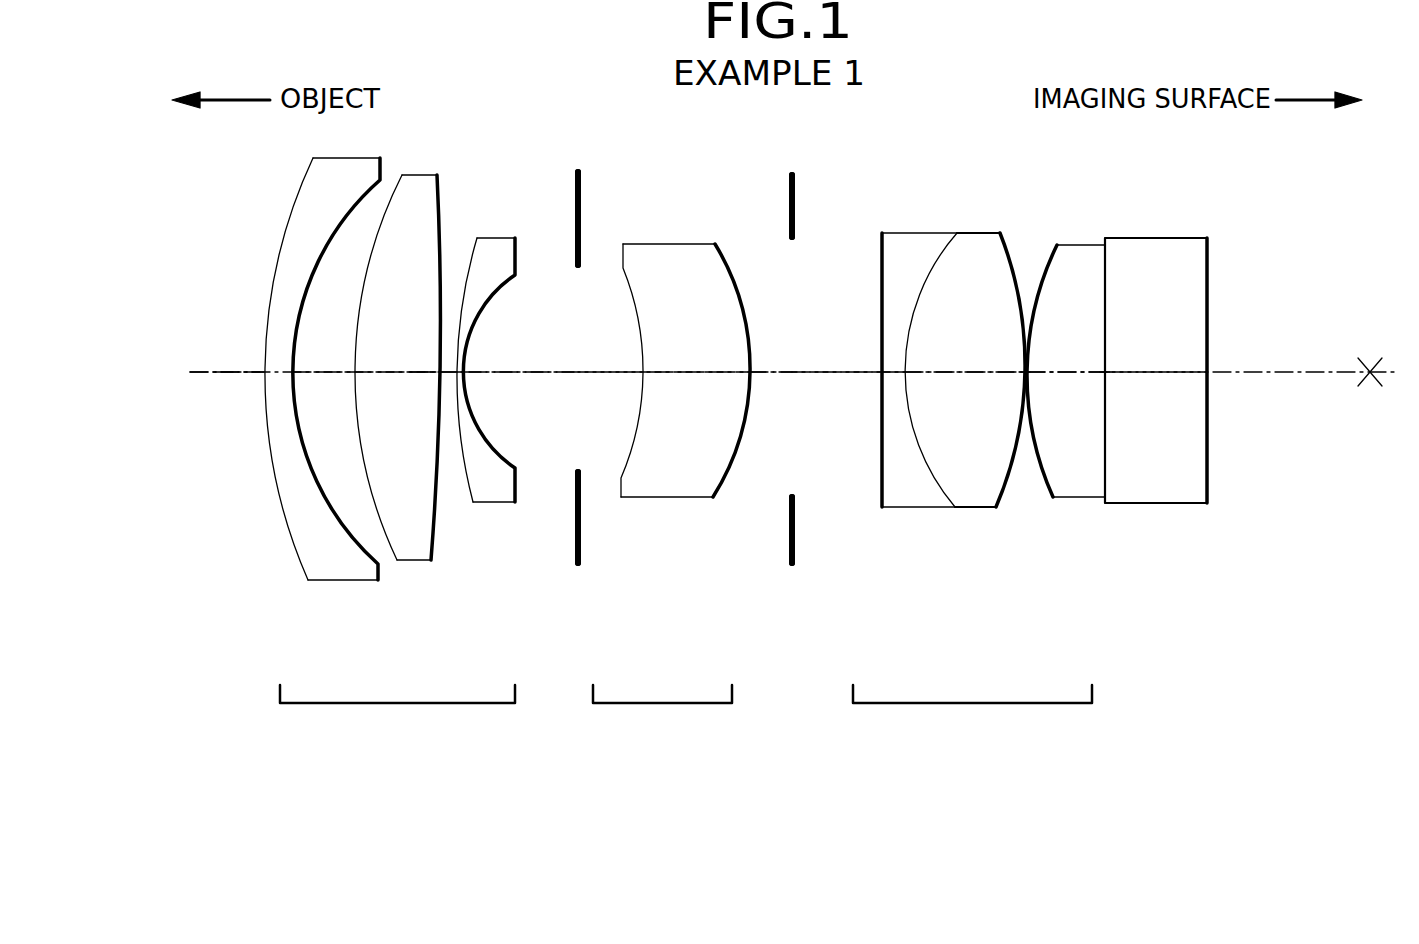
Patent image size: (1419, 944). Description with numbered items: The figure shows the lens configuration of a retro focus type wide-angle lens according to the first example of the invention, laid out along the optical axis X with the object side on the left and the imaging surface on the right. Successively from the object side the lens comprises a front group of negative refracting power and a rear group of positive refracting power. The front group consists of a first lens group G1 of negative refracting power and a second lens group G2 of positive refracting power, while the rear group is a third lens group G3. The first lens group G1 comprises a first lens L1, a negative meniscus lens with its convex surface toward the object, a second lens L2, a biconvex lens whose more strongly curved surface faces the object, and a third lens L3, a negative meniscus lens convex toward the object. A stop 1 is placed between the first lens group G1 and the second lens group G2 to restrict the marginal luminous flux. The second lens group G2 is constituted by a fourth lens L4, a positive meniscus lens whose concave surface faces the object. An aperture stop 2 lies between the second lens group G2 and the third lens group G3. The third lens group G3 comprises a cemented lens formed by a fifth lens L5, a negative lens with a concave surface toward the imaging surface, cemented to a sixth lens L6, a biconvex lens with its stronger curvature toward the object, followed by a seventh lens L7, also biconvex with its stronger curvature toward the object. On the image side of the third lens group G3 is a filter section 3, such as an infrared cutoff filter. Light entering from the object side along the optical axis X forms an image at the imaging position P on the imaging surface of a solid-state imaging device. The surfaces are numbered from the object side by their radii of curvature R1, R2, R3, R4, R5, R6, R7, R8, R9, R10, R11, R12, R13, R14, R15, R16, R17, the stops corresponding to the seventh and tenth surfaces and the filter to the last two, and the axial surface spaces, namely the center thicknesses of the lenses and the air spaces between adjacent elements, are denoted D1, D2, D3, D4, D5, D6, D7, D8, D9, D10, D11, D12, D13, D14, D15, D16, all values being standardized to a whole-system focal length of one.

The stop 1 is at (575, 540).
The aperture stop 2 is at (789, 540).
The filter section 3 is at (1160, 503).
The optical axis X is at (212, 374).
The imaging position P is at (1370, 388).
The first lens group G1 is at (397, 711).
The second lens group G2 is at (662, 711).
The third lens group G3 is at (972, 711).
The first lens L1 is at (345, 580).
The second lens L2 is at (422, 560).
The third lens L3 is at (495, 502).
The fourth lens L4 is at (676, 497).
The fifth lens L5 is at (915, 507).
The sixth lens L6 is at (985, 507).
The seventh lens L7 is at (1070, 497).
The radius of curvature of first lens surface R1 is at (296, 235).
The radius of curvature of second lens surface R2 is at (372, 196).
The radius of curvature of third lens surface R3 is at (362, 290).
The radius of curvature of fourth lens surface R4 is at (442, 205).
The radius of curvature of fifth lens surface R5 is at (466, 258).
The radius of curvature of sixth lens surface R6 is at (506, 292).
The radius of curvature of seventh surface R7 is at (574, 206).
The radius of curvature of eighth lens surface R8 is at (626, 266).
The radius of curvature of ninth lens surface R9 is at (736, 296).
The radius of curvature of tenth surface R10 is at (789, 207).
The radius of curvature of eleventh lens surface R11 is at (880, 268).
The radius of curvature of twelfth lens surface R12 is at (934, 262).
The radius of curvature of thirteenth lens surface R13 is at (1012, 266).
The radius of curvature of fourteenth lens surface R14 is at (1040, 282).
The radius of curvature of fifteenth lens surface R15 is at (1108, 262).
The radius of curvature of sixteenth surface R16 is at (1103, 318).
The radius of curvature of seventeenth surface R17 is at (1210, 266).
The first axial surface space D1 is at (268, 372).
The second axial surface space D2 is at (318, 372).
The third axial surface space D3 is at (395, 372).
The fourth axial surface space D4 is at (436, 371).
The fifth axial surface space D5 is at (462, 372).
The sixth axial surface space D6 is at (500, 372).
The seventh axial surface space D7 is at (620, 372).
The eighth axial surface space D8 is at (695, 372).
The ninth axial surface space D9 is at (765, 372).
The tenth axial surface space D10 is at (860, 372).
The eleventh axial surface space D11 is at (893, 372).
The twelfth axial surface space D12 is at (972, 372).
The thirteenth axial surface space D13 is at (1018, 370).
The fourteenth axial surface space D14 is at (1068, 372).
The fifteenth axial surface space D15 is at (1108, 372).
The sixteenth axial surface space D16 is at (1155, 372).